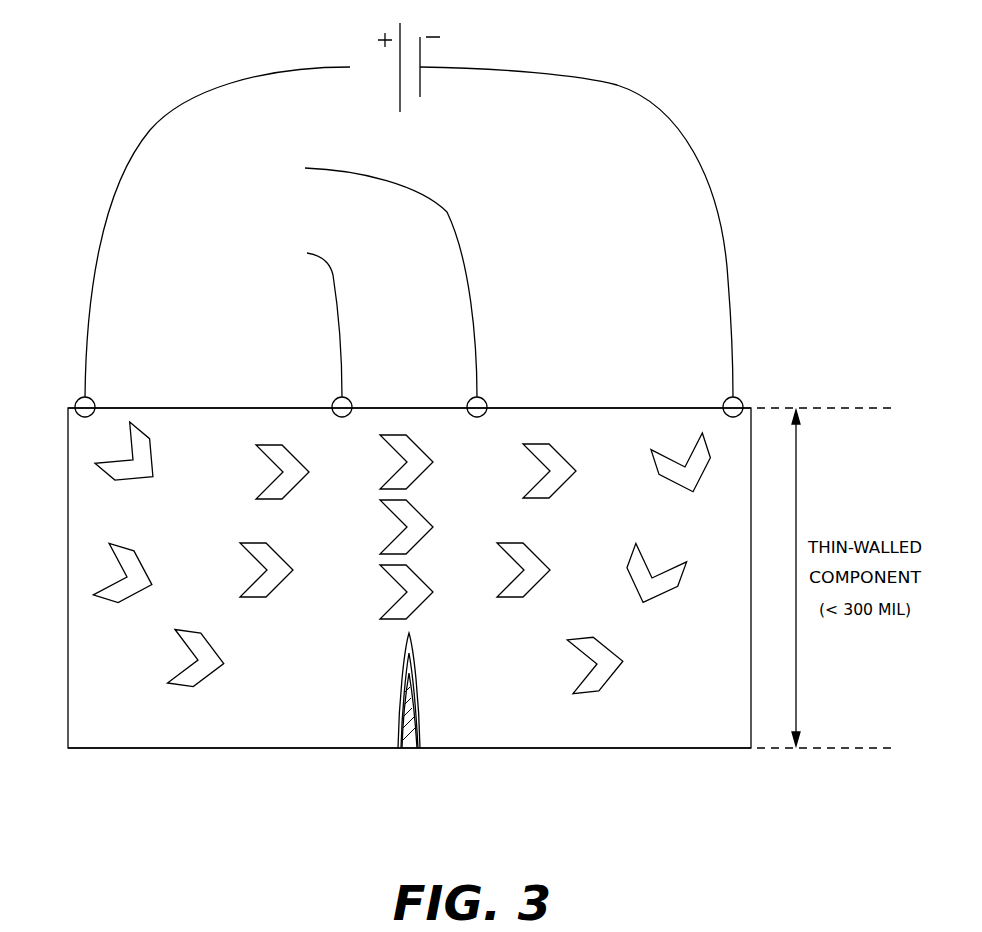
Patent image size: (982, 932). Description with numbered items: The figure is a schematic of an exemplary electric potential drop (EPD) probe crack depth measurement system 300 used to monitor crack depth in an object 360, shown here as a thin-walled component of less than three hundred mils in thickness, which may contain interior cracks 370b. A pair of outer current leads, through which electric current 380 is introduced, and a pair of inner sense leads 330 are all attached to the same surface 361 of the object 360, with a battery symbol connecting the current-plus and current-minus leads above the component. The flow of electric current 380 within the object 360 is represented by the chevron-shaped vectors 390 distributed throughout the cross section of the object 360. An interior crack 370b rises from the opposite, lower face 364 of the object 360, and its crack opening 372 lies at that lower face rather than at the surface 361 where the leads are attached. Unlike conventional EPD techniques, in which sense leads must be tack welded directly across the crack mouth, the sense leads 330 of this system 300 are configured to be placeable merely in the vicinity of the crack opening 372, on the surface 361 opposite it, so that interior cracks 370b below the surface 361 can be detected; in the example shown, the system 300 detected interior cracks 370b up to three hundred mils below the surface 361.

The EPD probe crack depth measurement system 300 is at (777, 118).
The sense leads 330 is at (447, 210).
The object 360 is at (68, 430).
The surface 361 is at (623, 408).
The bottom surface 364 is at (106, 732).
The interior crack 370b is at (418, 698).
The crack opening 372 is at (413, 745).
The electric current 380 is at (177, 97).
The vectors 390 is at (197, 678).